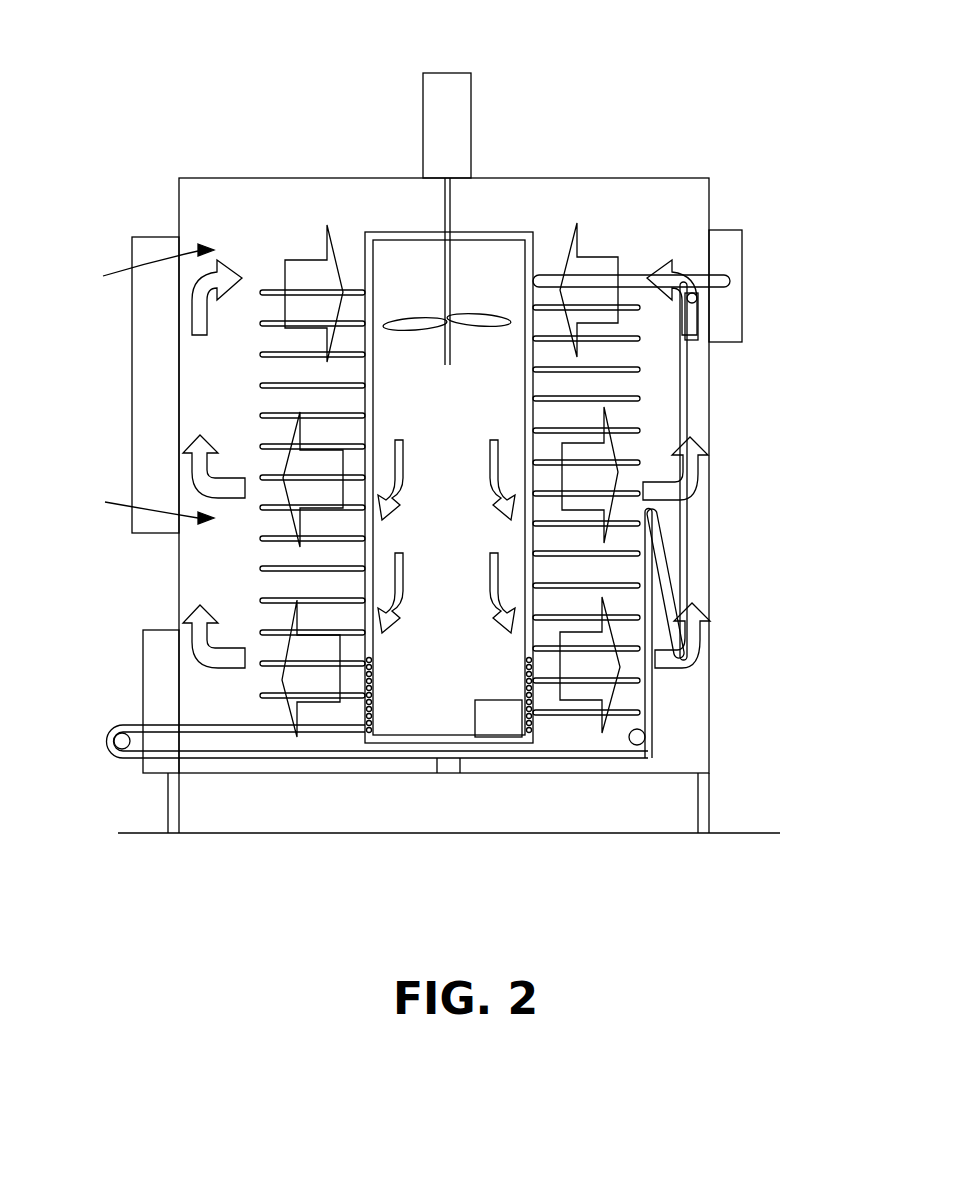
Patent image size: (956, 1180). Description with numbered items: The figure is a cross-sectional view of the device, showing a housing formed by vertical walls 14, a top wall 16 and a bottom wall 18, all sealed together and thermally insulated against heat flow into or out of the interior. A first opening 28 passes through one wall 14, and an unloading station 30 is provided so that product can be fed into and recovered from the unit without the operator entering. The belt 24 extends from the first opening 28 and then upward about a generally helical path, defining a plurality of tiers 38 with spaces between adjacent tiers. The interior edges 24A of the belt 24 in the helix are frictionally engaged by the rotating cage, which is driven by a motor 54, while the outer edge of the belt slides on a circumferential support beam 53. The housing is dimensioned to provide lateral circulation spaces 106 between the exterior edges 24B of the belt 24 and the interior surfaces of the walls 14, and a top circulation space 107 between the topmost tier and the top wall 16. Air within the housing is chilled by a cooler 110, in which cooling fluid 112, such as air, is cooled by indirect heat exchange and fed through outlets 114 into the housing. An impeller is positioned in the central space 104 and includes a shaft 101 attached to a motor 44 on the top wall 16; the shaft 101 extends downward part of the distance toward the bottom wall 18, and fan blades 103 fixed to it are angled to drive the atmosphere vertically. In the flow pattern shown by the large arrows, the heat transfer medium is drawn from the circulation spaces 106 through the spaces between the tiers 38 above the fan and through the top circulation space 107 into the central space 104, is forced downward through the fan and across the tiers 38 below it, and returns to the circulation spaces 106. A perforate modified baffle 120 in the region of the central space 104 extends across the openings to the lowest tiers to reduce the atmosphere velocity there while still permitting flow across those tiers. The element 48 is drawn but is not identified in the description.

The vertical walls 14 is at (709, 410).
The top wall 16 is at (552, 178).
The bottom wall 18 is at (372, 775).
The belt 24 is at (272, 567).
The interior edges 24A is at (533, 553).
The exterior edges 24B is at (633, 553).
The first opening 28 is at (143, 710).
The unloading station 30 is at (732, 284).
The tiers 38 is at (450, 481).
The motor 44 is at (451, 72).
The heat exchanger plates 48 is at (450, 335).
The circumferential support beam 53 is at (398, 743).
The motor 54 is at (498, 718).
The shaft 101 is at (432, 268).
The blades 103 is at (472, 313).
The central space 104 is at (449, 487).
The lateral circulation spaces 106 is at (446, 464).
The top circulation space 107 is at (628, 274).
The cooler 110 is at (158, 385).
The cooling fluid 112 is at (228, 384).
The outlets 114 is at (134, 384).
The modified baffle 120 is at (405, 717).